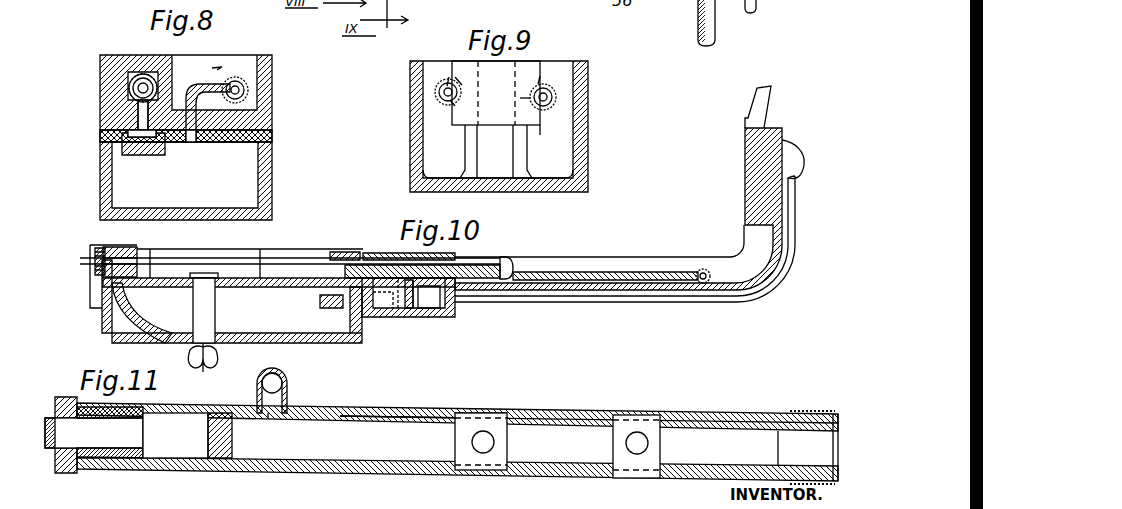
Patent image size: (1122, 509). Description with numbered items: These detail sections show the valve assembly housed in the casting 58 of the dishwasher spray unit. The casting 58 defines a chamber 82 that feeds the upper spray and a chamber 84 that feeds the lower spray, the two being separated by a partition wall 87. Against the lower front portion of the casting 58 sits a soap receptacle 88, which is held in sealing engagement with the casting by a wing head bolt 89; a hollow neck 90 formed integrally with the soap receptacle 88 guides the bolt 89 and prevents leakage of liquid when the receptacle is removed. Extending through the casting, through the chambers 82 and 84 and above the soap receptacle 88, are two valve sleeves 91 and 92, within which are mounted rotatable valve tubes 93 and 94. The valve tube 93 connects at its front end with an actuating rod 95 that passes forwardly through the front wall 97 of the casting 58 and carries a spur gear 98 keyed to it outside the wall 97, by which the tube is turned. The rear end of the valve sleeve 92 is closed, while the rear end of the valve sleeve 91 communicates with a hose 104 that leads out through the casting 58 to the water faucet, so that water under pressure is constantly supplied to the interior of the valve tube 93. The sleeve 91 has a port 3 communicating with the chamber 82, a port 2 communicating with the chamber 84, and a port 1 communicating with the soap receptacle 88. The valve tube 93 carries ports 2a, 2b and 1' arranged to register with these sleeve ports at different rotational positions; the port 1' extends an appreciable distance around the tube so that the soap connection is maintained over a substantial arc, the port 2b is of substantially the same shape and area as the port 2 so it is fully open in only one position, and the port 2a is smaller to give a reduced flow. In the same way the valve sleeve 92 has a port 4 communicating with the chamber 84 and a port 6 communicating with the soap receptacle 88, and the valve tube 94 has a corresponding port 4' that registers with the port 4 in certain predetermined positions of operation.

In FIG. 8, the port 1 is at (195, 147).
In FIG. 11, the port 1 is at (282, 390).
In FIG. 11, the port 1' is at (270, 428).
In FIG. 9, the port 2 is at (530, 95).
In FIG. 11, the port 2 is at (484, 448).
In FIG. 9, the port 2a is at (530, 98).
In FIG. 9, the port 2b is at (540, 126).
In FIG. 11, the port 3 is at (637, 443).
In FIG. 9, the port 4 is at (467, 64).
In FIG. 9, the port 4' is at (460, 110).
In FIG. 8, the port 6 is at (140, 108).
In FIG. 10, the casting 58 is at (648, 292).
In FIG. 10, the chamber 82 is at (440, 300).
In FIG. 9, the chamber 84 is at (503, 163).
In FIG. 10, the chamber 84 is at (383, 300).
In FIG. 10, the partition wall 87 is at (409, 300).
In FIG. 8, the soap receptacle 88 is at (268, 178).
In FIG. 10, the soap receptacle 88 is at (150, 342).
In FIG. 10, the wing head bolt 89 is at (204, 366).
In FIG. 10, the hollow neck 90 is at (215, 314).
In FIG. 8, the valve sleeve 91 is at (246, 80).
In FIG. 9, the valve sleeve 91 is at (556, 97).
In FIG. 10, the valve sleeve 91 is at (344, 253).
In FIG. 11, the valve sleeve 91 is at (463, 406).
In FIG. 8, the valve sleeve 92 is at (138, 78).
In FIG. 9, the valve sleeve 92 is at (437, 92).
In FIG. 8, the valve tube 93 is at (262, 92).
In FIG. 9, the valve tube 93 is at (548, 84).
In FIG. 10, the valve tube 93 is at (383, 258).
In FIG. 11, the valve tube 93 is at (418, 418).
In FIG. 8, the valve tube 94 is at (135, 84).
In FIG. 9, the valve tube 94 is at (449, 77).
In FIG. 10, the actuating rod 95 is at (185, 258).
In FIG. 11, the actuating rod 95 is at (72, 440).
In FIG. 10, the front wall 97 is at (117, 250).
In FIG. 10, the spur gear 98 is at (95, 272).
In FIG. 10, the hose 104 is at (660, 272).